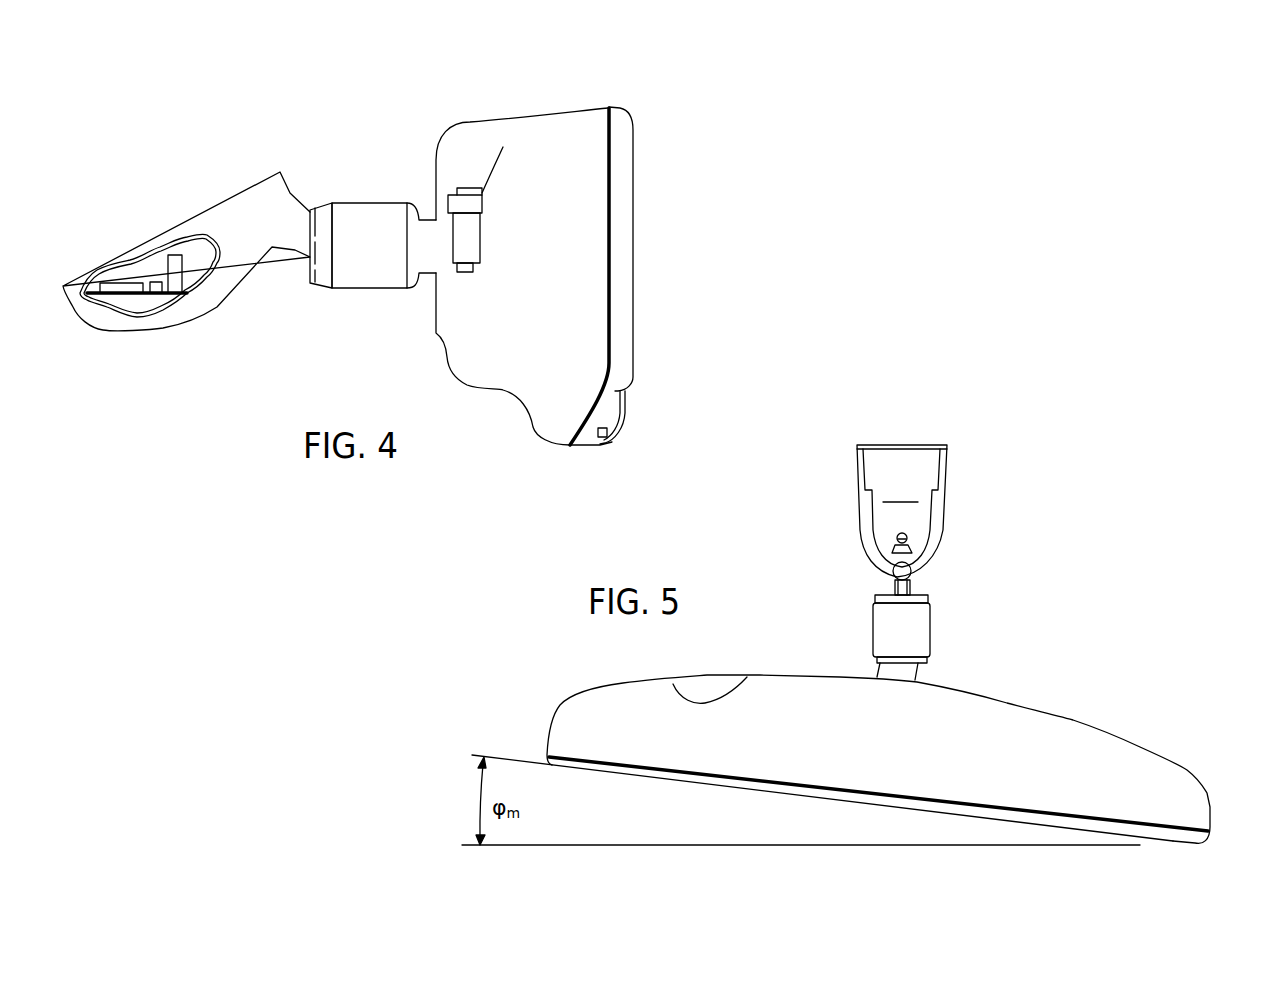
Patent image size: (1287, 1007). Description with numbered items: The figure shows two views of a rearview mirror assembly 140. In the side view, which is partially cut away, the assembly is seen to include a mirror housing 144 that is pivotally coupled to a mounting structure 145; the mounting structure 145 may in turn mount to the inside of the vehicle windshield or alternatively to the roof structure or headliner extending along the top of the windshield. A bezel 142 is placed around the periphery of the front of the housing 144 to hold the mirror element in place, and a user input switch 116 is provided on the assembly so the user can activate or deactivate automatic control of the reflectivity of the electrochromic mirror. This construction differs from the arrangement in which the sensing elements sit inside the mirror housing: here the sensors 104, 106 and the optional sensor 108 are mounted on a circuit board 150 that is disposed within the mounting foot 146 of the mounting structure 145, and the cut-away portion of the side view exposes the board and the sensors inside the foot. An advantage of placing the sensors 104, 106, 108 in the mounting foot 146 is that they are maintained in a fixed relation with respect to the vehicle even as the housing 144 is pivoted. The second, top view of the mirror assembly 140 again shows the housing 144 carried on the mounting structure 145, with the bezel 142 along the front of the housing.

In FIG. 4, the sensor 104 is at (110, 287).
In FIG. 4, the sensor 106 is at (154, 278).
In FIG. 4, the optional sensor 108 is at (176, 257).
In FIG. 4, the user input switch 116 is at (612, 441).
In FIG. 4, the rearview mirror assembly 140 is at (515, 259).
In FIG. 5, the rearview mirror assembly 140 is at (878, 663).
In FIG. 4, the bezel 142 is at (624, 115).
In FIG. 5, the bezel 142 is at (1172, 838).
In FIG. 4, the mirror housing 144 is at (541, 128).
In FIG. 5, the mirror housing 144 is at (1074, 730).
In FIG. 4, the mounting structure 145 is at (342, 155).
In FIG. 5, the mounting structure 145 is at (1012, 633).
In FIG. 4, the mounting foot 146 is at (212, 297).
In FIG. 4, the circuit board 150 is at (97, 300).